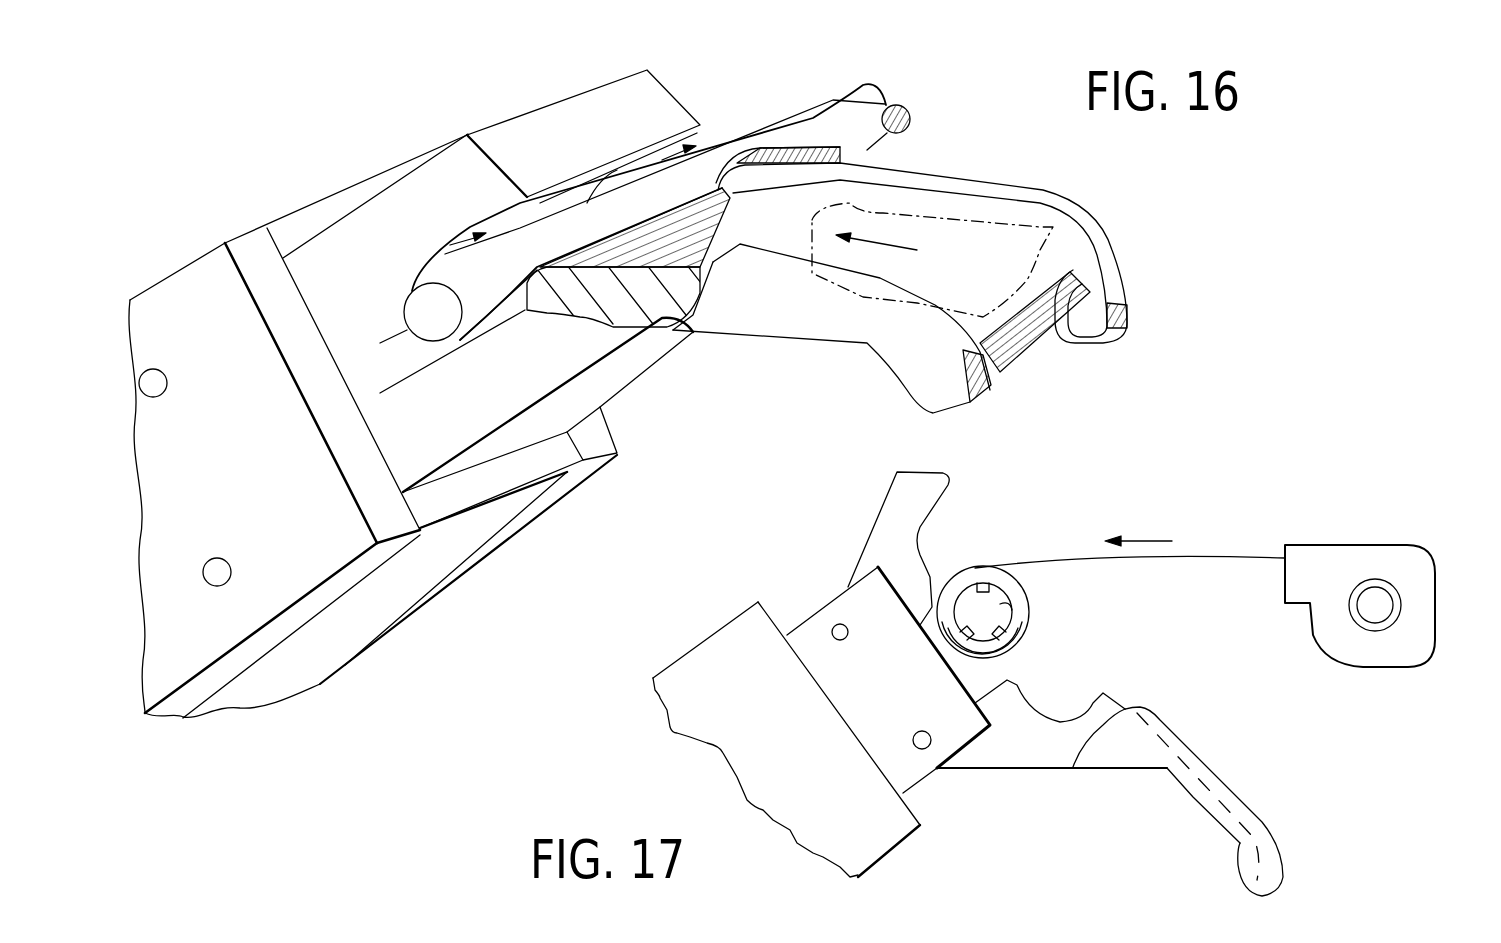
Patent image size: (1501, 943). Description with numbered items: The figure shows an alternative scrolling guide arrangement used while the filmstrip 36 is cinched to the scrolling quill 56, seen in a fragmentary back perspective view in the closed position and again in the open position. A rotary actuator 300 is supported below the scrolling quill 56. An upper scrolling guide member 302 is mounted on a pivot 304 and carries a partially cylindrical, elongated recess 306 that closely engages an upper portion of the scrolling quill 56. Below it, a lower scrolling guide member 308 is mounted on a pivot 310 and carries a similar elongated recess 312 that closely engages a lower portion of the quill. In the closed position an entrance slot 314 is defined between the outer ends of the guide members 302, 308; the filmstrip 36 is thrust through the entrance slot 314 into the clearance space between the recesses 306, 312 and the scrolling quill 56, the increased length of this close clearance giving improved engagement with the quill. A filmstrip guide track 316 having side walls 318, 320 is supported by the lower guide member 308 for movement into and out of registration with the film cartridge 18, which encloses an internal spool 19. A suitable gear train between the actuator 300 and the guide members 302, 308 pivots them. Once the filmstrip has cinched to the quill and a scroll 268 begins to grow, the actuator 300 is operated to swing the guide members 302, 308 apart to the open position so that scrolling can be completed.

In FIG. 16, the rotary actuator 300 is at (236, 468).
In FIG. 17, the rotary actuator 300 is at (768, 711).
In FIG. 16, the upper scrolling guide member 302 is at (447, 163).
In FIG. 17, the upper scrolling guide member 302 is at (880, 530).
In FIG. 16, the pivot 304 is at (158, 374).
In FIG. 17, the pivot 304 is at (840, 624).
In FIG. 16, the elongated recess 306 is at (433, 253).
In FIG. 17, the elongated recess 306 is at (952, 532).
In FIG. 16, the lower scrolling guide member 308 is at (577, 353).
In FIG. 17, the lower scrolling guide member 308 is at (1030, 757).
In FIG. 16, the pivot 310 is at (222, 560).
In FIG. 17, the pivot 310 is at (922, 749).
In FIG. 16, the elongated recess 312 is at (508, 320).
In FIG. 17, the elongated recess 312 is at (1066, 686).
In FIG. 16, the entrance slot 314 is at (700, 137).
In FIG. 16, the filmstrip guide track 316 is at (867, 333).
In FIG. 17, the filmstrip guide track 316 is at (1197, 803).
In FIG. 16, the side wall 318 is at (973, 350).
In FIG. 17, the side wall 318 is at (1220, 777).
In FIG. 16, the side wall 320 is at (1113, 292).
In FIG. 16, the filmstrip 36 is at (1067, 220).
In FIG. 17, the filmstrip 36 is at (1220, 555).
In FIG. 16, the scrolling quill 56 is at (815, 127).
In FIG. 17, the scrolling quill 56 is at (1010, 613).
In FIG. 17, the scroll 268 is at (1017, 593).
In FIG. 17, the film cartridge 18 is at (1397, 648).
In FIG. 17, the spool 19 is at (1378, 602).